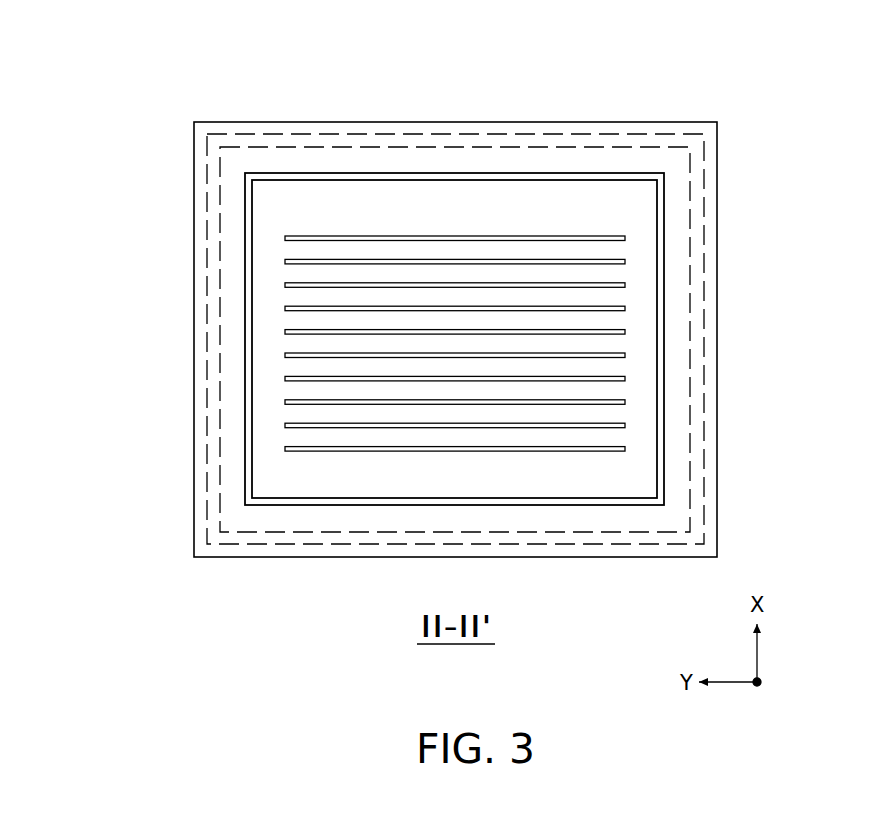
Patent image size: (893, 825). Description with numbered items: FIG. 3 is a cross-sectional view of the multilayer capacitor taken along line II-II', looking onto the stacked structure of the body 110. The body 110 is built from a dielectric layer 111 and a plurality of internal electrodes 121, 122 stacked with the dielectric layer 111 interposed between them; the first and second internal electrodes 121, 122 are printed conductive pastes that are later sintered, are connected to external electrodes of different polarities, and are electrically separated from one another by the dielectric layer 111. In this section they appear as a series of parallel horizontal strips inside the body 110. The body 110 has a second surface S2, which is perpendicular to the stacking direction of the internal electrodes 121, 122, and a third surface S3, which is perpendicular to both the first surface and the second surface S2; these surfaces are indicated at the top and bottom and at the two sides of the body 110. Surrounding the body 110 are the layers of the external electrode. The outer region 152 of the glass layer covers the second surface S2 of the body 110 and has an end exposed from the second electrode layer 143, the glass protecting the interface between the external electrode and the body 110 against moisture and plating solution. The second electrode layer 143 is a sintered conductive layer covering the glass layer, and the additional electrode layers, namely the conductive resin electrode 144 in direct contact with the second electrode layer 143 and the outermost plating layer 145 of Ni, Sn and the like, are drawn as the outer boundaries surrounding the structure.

The body 110 is at (508, 272).
The dielectric layer 111 is at (568, 248).
The first internal electrode 121 is at (468, 237).
The second internal electrode 122 is at (521, 261).
The second electrode layer 143 is at (683, 240).
The conductive resin electrode 144 is at (699, 199).
The plating layer 145 is at (713, 162).
The outer region 152 is at (662, 287).
The second surface S2 is at (348, 176).
The third surface S3 is at (250, 388).